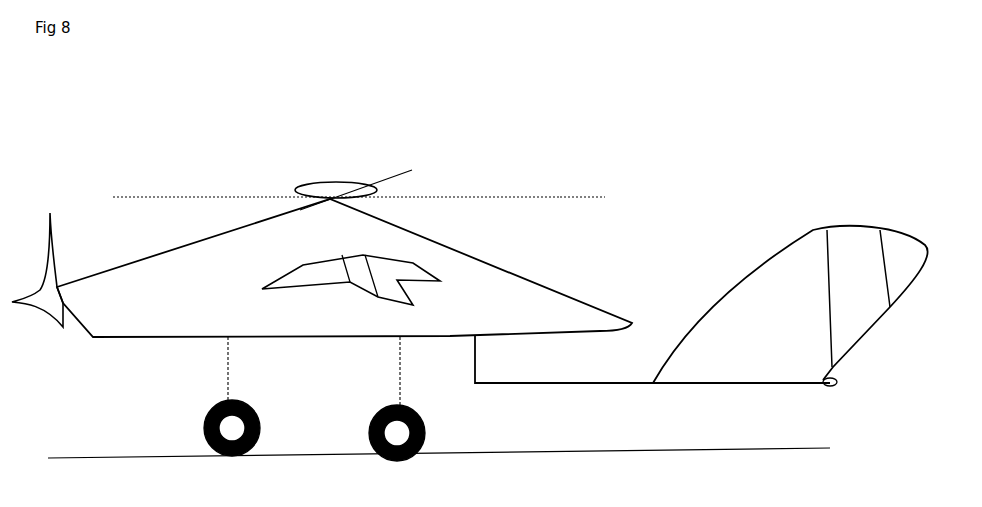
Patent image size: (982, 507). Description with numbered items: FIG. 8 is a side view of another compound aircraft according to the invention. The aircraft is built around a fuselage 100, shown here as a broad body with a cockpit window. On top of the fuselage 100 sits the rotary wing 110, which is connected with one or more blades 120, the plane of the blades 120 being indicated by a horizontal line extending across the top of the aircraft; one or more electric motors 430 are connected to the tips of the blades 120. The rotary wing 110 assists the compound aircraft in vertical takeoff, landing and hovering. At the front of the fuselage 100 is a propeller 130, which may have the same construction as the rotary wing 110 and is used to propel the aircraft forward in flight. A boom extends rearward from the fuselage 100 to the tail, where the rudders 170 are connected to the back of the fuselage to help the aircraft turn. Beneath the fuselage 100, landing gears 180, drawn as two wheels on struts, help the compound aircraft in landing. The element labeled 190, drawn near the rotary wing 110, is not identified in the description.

The fuselage 100 is at (132, 252).
The rotary wing 110 is at (309, 182).
The blades 120 is at (146, 194).
The propeller 130 is at (40, 307).
The rudders 170 is at (818, 231).
The landing gears 180 is at (365, 418).
The rotor shaft axis 190 is at (413, 169).
The electric motors 430 is at (599, 194).